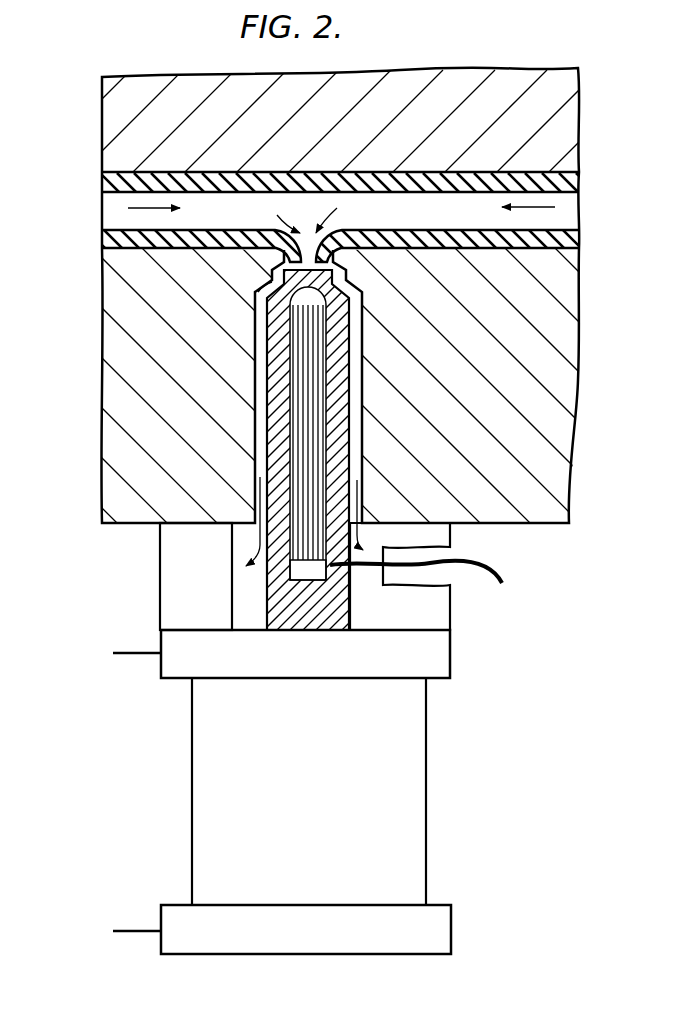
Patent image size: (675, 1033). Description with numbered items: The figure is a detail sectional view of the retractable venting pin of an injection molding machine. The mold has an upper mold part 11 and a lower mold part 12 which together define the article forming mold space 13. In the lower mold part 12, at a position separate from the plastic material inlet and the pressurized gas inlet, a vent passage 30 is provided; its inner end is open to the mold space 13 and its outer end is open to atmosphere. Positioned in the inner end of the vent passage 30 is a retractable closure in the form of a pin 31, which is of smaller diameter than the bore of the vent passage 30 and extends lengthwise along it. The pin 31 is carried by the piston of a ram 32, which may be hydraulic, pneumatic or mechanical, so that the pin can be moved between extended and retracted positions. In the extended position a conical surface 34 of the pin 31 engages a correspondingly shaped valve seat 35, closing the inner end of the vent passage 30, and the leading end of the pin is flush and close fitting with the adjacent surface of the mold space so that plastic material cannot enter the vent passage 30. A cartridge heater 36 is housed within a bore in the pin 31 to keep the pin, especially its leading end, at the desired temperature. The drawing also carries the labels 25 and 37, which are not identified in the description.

The upper mold part 11 is at (118, 97).
The article forming mold space 13 is at (106, 175).
The gas passage 25 is at (112, 200).
The lower insulating layer 37 is at (108, 240).
The valve seat 35 is at (263, 287).
The conical surface 34 is at (273, 297).
The pin 31 is at (270, 335).
The vent passage 30 is at (260, 375).
The lower mold part 12 is at (118, 455).
The cartridge heater 36 is at (305, 445).
The ram 32 is at (202, 757).